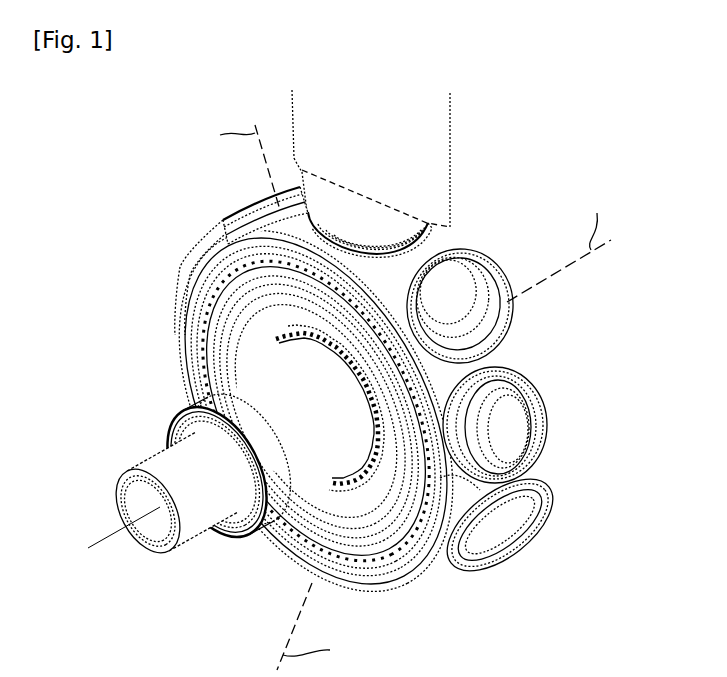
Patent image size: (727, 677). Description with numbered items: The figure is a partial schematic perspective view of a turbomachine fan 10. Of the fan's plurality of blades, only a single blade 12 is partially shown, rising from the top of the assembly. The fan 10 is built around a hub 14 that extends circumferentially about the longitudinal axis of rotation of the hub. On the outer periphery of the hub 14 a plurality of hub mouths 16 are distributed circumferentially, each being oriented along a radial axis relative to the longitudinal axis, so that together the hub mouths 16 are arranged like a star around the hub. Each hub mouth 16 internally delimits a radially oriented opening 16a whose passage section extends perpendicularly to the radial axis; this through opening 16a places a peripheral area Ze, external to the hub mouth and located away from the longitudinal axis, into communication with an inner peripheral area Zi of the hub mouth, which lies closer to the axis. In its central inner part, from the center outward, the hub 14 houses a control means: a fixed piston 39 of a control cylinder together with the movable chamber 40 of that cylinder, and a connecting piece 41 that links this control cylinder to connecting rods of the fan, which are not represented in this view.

The fan 10 is at (132, 122).
The blade 12 is at (471, 127).
The hub 14 is at (195, 312).
The hub mouth 16 is at (247, 205).
The opening 16a is at (479, 293).
The fixed piston 39 is at (170, 463).
The movable chamber 40 is at (235, 390).
The connecting piece 41 is at (343, 497).
The inner peripheral area Zi is at (442, 307).
The peripheral area Ze is at (544, 332).